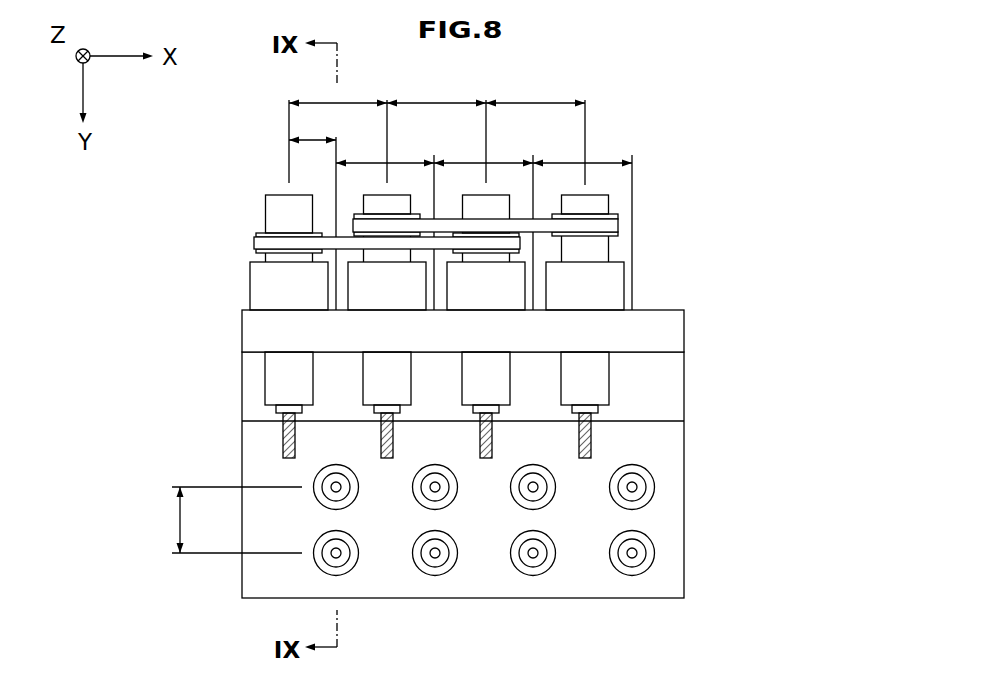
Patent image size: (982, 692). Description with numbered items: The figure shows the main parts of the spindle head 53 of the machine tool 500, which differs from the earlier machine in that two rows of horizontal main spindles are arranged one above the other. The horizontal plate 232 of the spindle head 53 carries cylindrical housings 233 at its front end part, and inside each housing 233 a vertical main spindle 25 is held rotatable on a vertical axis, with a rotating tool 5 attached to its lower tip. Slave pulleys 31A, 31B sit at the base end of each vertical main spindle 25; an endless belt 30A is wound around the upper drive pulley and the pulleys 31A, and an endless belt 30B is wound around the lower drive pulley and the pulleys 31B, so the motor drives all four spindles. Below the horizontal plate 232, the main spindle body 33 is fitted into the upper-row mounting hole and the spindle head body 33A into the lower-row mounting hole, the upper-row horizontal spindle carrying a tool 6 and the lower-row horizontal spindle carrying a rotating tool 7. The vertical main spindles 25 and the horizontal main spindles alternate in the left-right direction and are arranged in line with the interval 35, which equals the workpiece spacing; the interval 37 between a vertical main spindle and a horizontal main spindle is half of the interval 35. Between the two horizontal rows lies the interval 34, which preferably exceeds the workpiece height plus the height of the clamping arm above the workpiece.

The machine tool 500 is at (727, 103).
The spindle head 53 is at (693, 365).
The horizontal plate 232 is at (685, 322).
The housing 233 is at (247, 285).
The vertical main spindle 25 is at (263, 383).
The tool 5 is at (283, 442).
The endless belt 30A is at (540, 223).
The endless belt 30B is at (330, 243).
The slave pulley 31A is at (616, 212).
The slave pulley 31B is at (262, 232).
The main spindle body 33 is at (360, 488).
The spindle head body 33A is at (648, 572).
The tool 6 is at (333, 492).
The tool 7 is at (336, 556).
The interval 34 is at (180, 522).
The interval 35 is at (368, 101).
The interval 37 is at (313, 133).